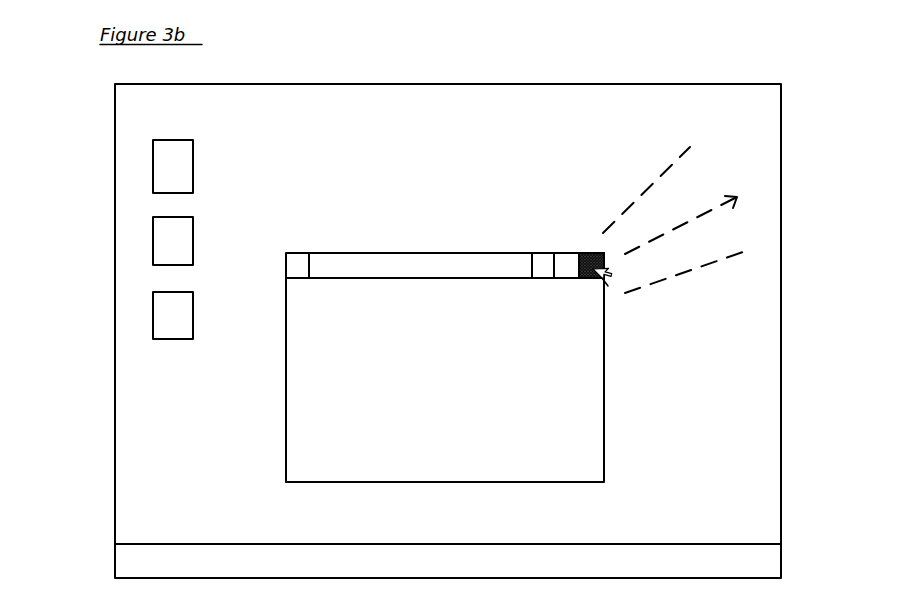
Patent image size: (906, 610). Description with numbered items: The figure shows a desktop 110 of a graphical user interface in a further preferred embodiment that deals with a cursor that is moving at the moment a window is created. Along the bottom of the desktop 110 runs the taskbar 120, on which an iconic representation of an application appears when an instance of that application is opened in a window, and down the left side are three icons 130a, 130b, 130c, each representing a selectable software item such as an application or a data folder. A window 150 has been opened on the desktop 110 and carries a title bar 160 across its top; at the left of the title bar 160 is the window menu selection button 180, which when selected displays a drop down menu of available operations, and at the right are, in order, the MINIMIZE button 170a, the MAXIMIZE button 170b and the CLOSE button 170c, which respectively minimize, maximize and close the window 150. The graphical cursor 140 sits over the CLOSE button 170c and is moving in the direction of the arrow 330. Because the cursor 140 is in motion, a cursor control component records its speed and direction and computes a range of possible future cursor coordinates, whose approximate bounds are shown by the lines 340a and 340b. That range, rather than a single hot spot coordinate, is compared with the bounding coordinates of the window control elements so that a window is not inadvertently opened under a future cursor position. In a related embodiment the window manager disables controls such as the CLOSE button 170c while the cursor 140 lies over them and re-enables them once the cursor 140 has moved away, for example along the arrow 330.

The desktop 110 is at (781, 146).
The taskbar 120 is at (757, 553).
The icon 130a is at (153, 150).
The icon 130b is at (153, 225).
The icon 130c is at (153, 298).
The graphical cursor 140 is at (607, 286).
The window 150 is at (604, 406).
The title bar 160 is at (388, 268).
The MINIMIZE button 170a is at (532, 253).
The MAXIMIZE button 170b is at (554, 253).
The CLOSE button 170c is at (581, 253).
The window menu selection button 180 is at (300, 252).
The direction of cursor movement 330 is at (695, 218).
The bound line 340a is at (660, 178).
The bound line 340b is at (690, 268).